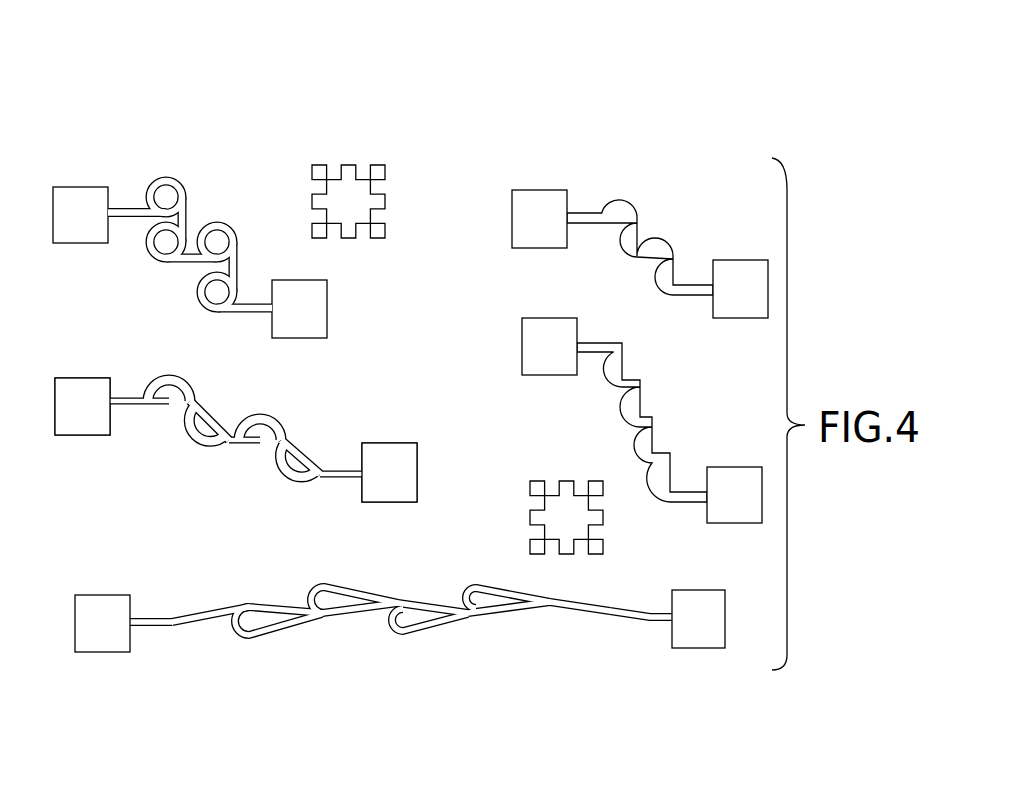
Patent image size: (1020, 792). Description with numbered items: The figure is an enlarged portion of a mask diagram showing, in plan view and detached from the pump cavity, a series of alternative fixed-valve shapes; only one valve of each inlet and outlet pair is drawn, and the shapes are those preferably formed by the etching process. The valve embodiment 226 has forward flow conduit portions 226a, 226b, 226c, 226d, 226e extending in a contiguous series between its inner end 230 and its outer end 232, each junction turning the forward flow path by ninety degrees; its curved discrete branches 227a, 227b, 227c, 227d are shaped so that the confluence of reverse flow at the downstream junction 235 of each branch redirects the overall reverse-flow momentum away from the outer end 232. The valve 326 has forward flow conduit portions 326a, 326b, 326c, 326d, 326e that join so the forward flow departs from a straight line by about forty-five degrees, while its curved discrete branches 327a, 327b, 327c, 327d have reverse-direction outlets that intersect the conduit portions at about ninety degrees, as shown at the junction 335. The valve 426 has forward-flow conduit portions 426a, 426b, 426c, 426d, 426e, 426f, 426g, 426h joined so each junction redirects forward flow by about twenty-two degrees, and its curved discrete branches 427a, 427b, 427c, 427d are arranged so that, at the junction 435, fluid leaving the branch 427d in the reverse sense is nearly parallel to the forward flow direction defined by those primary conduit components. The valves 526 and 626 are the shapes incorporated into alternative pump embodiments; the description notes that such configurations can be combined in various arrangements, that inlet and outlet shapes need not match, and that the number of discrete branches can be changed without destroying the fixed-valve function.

The valve embodiment 226 is at (224, 215).
The outer end 232 is at (117, 207).
The inner end 230 is at (272, 292).
The downstream junction 235 is at (137, 194).
The forward flow conduit portion 226a is at (137, 218).
The forward flow conduit portion 226b is at (190, 215).
The forward flow conduit portion 226c is at (192, 262).
The forward flow conduit portion 226d is at (240, 272).
The forward flow conduit portion 226e is at (243, 313).
The discrete branch 227a is at (203, 307).
The discrete branch 227b is at (219, 221).
The discrete branch 227c is at (148, 258).
The discrete branch 227d is at (162, 178).
The valve 326 is at (248, 436).
The junction 335 is at (133, 384).
The forward flow conduit portion 326a is at (130, 409).
The forward flow conduit portion 326b is at (219, 411).
The forward flow conduit portion 326c is at (225, 444).
The forward flow conduit portion 326d is at (308, 456).
The forward flow conduit portion 326e is at (328, 478).
The discrete branch 327a is at (281, 477).
The discrete branch 327b is at (260, 412).
The discrete branch 327c is at (186, 433).
The discrete branch 327d is at (168, 379).
The valve 426 is at (400, 622).
The junction 435 is at (210, 625).
The forward-flow conduit portion 426a is at (150, 615).
The forward-flow conduit portion 426b is at (227, 608).
The forward-flow conduit portion 426c is at (284, 604).
The forward-flow conduit portion 426d is at (377, 614).
The forward-flow conduit portion 426e is at (443, 602).
The forward-flow conduit portion 426f is at (534, 613).
The forward-flow conduit portion 426g is at (594, 604).
The forward-flow conduit portion 426h is at (648, 621).
The discrete branch 427a is at (487, 585).
The discrete branch 427b is at (395, 634).
The discrete branch 427c is at (318, 585).
The discrete branch 427d is at (229, 636).
The valve 526 is at (601, 178).
The valve 626 is at (688, 438).